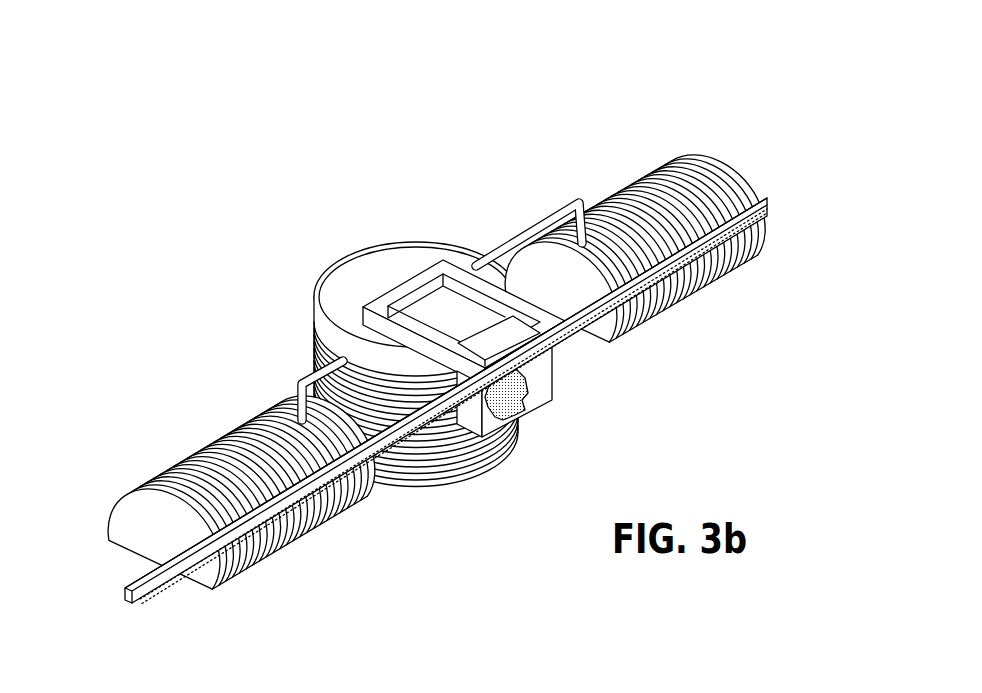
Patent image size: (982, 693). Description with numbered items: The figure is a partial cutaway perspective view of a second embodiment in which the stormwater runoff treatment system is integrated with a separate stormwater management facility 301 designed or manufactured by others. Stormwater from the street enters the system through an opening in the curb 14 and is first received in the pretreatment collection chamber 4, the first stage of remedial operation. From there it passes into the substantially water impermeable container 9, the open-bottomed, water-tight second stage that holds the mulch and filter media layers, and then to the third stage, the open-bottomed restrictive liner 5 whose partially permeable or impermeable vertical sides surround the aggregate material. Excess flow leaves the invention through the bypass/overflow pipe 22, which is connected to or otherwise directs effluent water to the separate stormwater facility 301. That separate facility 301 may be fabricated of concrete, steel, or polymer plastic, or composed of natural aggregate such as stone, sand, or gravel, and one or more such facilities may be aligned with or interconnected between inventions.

The pretreatment collection chamber 4 is at (553, 378).
The restrictive liner 5 is at (345, 258).
The substantially water impermeable container 9 is at (446, 262).
The curb 14 is at (163, 596).
The bypass/overflow pipe 22 is at (556, 211).
The separate stormwater facility 301 is at (637, 186).